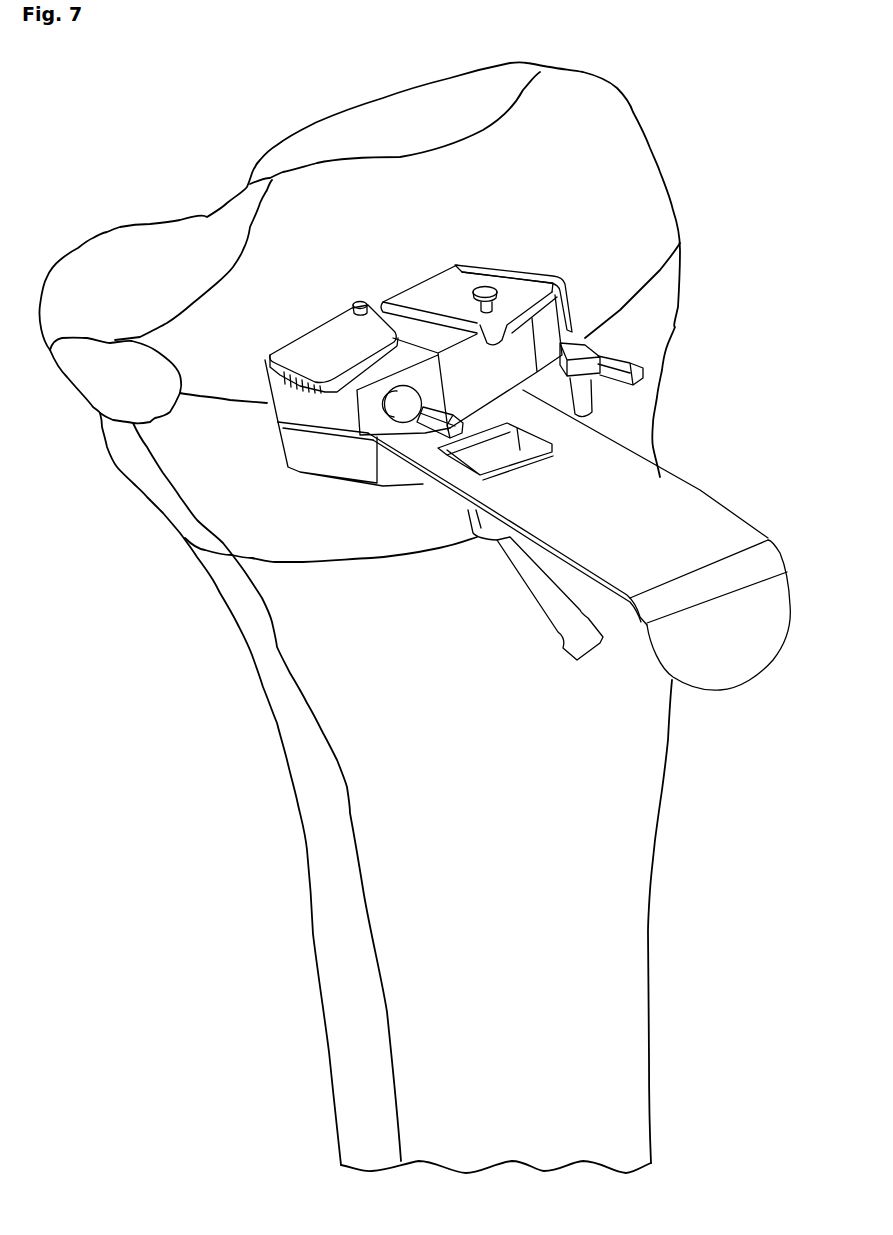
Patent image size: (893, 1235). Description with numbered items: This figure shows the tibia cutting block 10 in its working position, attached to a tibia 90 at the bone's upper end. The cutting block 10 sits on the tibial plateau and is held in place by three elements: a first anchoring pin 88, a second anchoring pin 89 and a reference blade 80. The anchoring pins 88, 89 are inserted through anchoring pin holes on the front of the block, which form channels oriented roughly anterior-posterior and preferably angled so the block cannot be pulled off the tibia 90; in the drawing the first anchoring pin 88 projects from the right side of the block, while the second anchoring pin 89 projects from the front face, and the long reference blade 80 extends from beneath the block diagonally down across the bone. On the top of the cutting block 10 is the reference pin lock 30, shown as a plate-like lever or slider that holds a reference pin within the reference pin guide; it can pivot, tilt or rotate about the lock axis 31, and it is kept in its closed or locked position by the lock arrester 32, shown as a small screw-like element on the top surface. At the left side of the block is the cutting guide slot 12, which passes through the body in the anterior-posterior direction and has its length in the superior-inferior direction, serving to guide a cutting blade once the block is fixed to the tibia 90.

The tibia cutting block 10 is at (568, 257).
The cutting guide slot 12 is at (570, 304).
The reference pin lock 30 is at (313, 357).
The lock axis 31 is at (356, 302).
The lock arrester 32 is at (485, 287).
The reference blade 80 is at (675, 520).
The first anchoring pin 88 is at (632, 353).
The second anchoring pin 89 is at (432, 436).
The tibia 90 is at (210, 480).